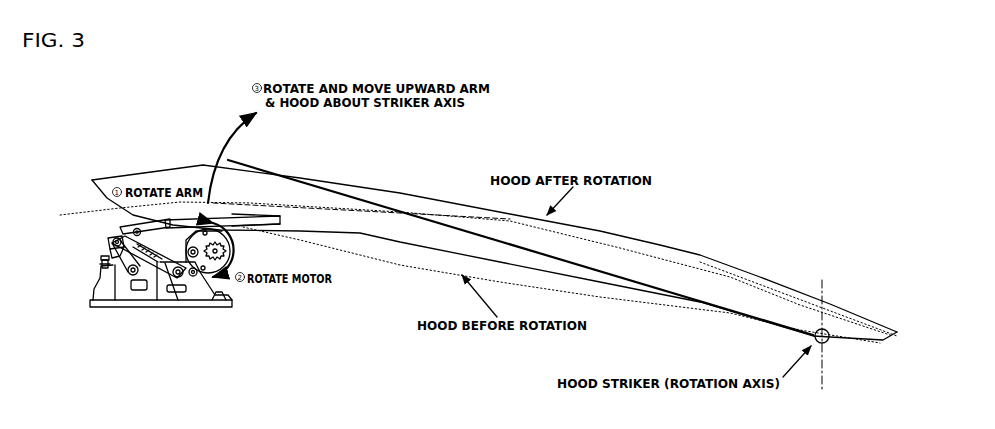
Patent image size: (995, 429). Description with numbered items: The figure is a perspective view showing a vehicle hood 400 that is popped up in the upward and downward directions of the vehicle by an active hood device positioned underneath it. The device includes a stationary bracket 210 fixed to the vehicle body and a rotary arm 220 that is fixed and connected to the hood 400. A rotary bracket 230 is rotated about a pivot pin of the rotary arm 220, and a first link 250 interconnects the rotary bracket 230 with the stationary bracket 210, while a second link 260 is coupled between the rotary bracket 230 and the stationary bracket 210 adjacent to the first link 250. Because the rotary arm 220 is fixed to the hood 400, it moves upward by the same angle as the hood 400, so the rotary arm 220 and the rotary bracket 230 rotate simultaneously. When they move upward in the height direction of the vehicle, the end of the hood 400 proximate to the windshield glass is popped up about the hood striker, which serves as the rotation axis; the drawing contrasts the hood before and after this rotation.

The stationary bracket 210 is at (103, 293).
The rotary arm 220 is at (268, 219).
The rotary bracket 230 is at (140, 224).
The first link 250 is at (108, 257).
The second link 260 is at (160, 276).
The hood 400 is at (672, 247).